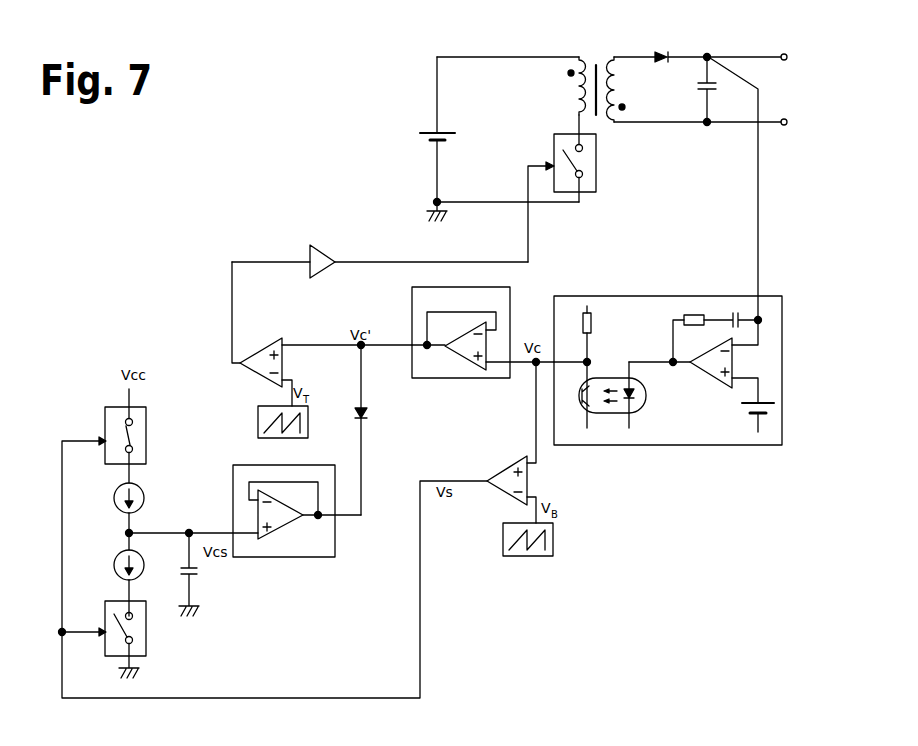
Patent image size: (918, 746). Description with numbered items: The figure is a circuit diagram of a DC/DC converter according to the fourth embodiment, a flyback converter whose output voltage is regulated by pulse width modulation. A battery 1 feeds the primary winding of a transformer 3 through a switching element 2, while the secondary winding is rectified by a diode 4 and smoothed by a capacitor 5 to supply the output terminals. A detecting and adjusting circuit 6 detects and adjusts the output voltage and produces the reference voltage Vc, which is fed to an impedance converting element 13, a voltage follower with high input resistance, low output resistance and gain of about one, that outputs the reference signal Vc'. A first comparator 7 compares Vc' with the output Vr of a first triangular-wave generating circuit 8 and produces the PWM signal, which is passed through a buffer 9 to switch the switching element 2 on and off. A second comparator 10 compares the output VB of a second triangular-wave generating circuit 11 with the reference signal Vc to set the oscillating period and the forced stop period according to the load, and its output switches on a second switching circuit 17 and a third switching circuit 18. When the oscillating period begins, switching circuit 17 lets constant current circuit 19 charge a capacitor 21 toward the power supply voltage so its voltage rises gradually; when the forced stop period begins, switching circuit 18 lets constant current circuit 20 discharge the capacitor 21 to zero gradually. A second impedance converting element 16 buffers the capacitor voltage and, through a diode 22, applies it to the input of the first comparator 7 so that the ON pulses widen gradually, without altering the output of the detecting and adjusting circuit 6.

The battery 1 is at (413, 143).
The switching element 2 is at (606, 182).
The transformer 3 is at (590, 48).
The rectifying diode 4 is at (663, 48).
The smoothing capacitor 5 is at (727, 90).
The detecting and adjusting circuit 6 is at (706, 466).
The first comparator 7 is at (277, 330).
The first triangular-wave generating circuit 8 is at (247, 432).
The driver buffer 9 is at (340, 270).
The second comparator 10 is at (494, 462).
The second triangular-wave generating circuit 11 is at (530, 565).
The impedance converting element 13 is at (452, 388).
The second impedance converting element 16 is at (338, 560).
The second switching circuit 17 is at (155, 441).
The third switching circuit 18 is at (157, 636).
The constant current circuit 19 is at (155, 501).
The constant current circuit 20 is at (147, 583).
The capacitor 21 is at (208, 578).
The diode 22 is at (378, 412).